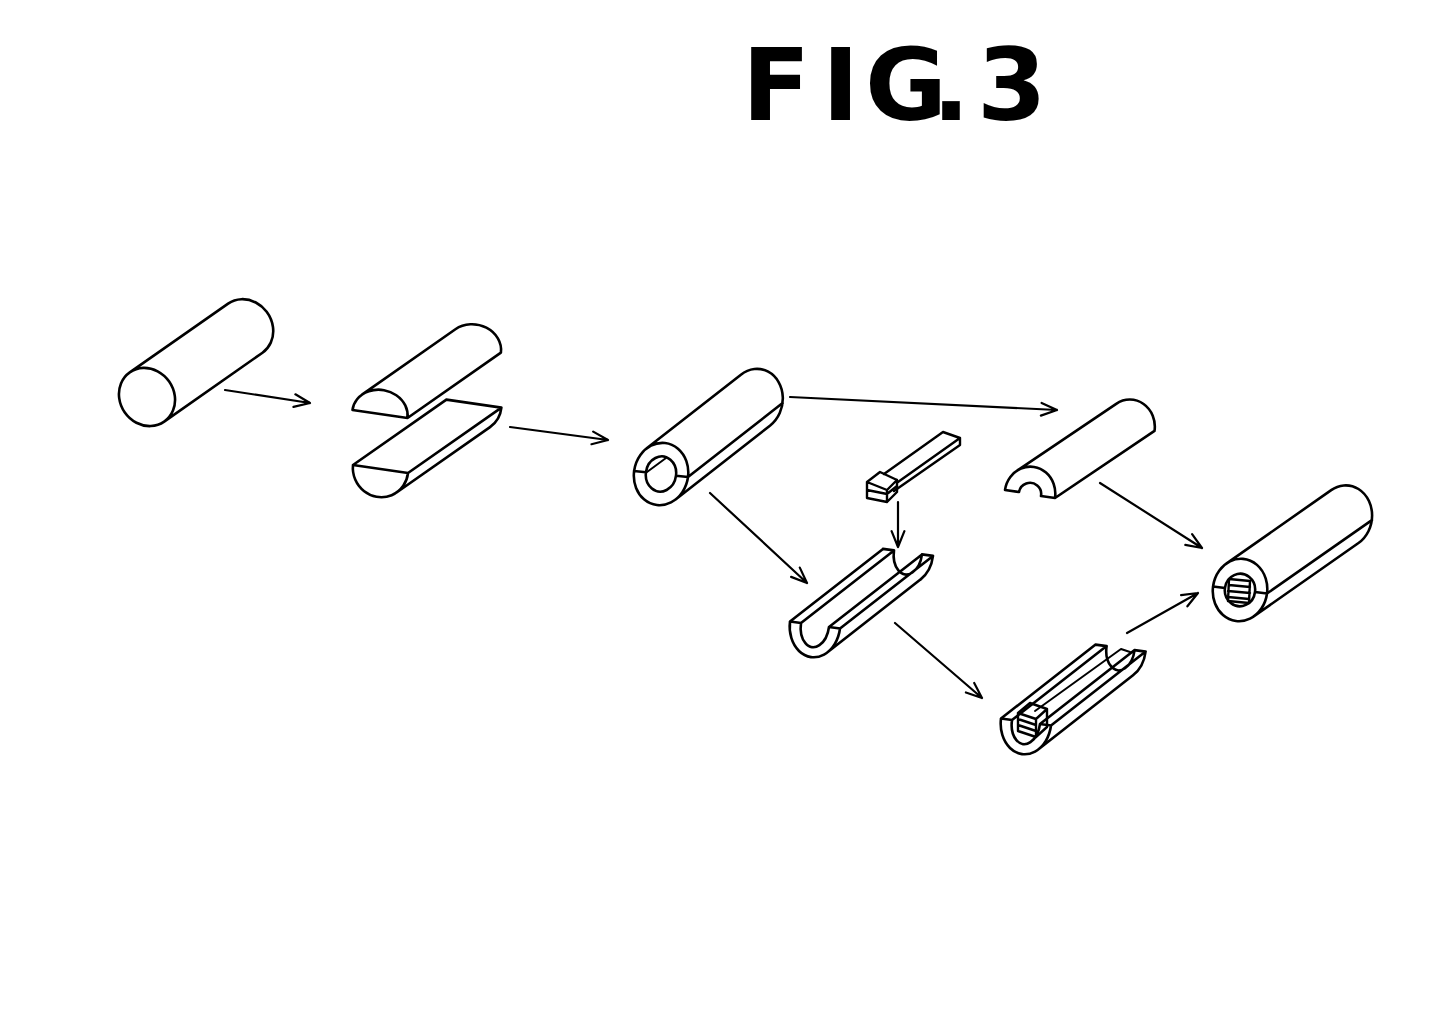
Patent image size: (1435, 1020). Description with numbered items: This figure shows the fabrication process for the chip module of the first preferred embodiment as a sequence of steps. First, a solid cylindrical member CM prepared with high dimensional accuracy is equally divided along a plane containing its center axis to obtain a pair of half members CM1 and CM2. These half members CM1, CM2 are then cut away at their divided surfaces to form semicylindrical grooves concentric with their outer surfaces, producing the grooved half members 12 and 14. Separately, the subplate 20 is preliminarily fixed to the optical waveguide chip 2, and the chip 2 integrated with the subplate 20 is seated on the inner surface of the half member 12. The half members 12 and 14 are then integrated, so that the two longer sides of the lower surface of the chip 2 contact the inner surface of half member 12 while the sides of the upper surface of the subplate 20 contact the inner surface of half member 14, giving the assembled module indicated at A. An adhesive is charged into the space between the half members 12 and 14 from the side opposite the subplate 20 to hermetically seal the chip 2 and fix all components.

The solid cylindrical member CM is at (188, 333).
The half member CM2 is at (453, 325).
The half member CM1 is at (415, 477).
The half member 14 is at (693, 415).
The half member 12 is at (658, 495).
The optical waveguide chip 2 is at (925, 443).
The subplate 20 is at (875, 473).
The assembled core A is at (1417, 457).